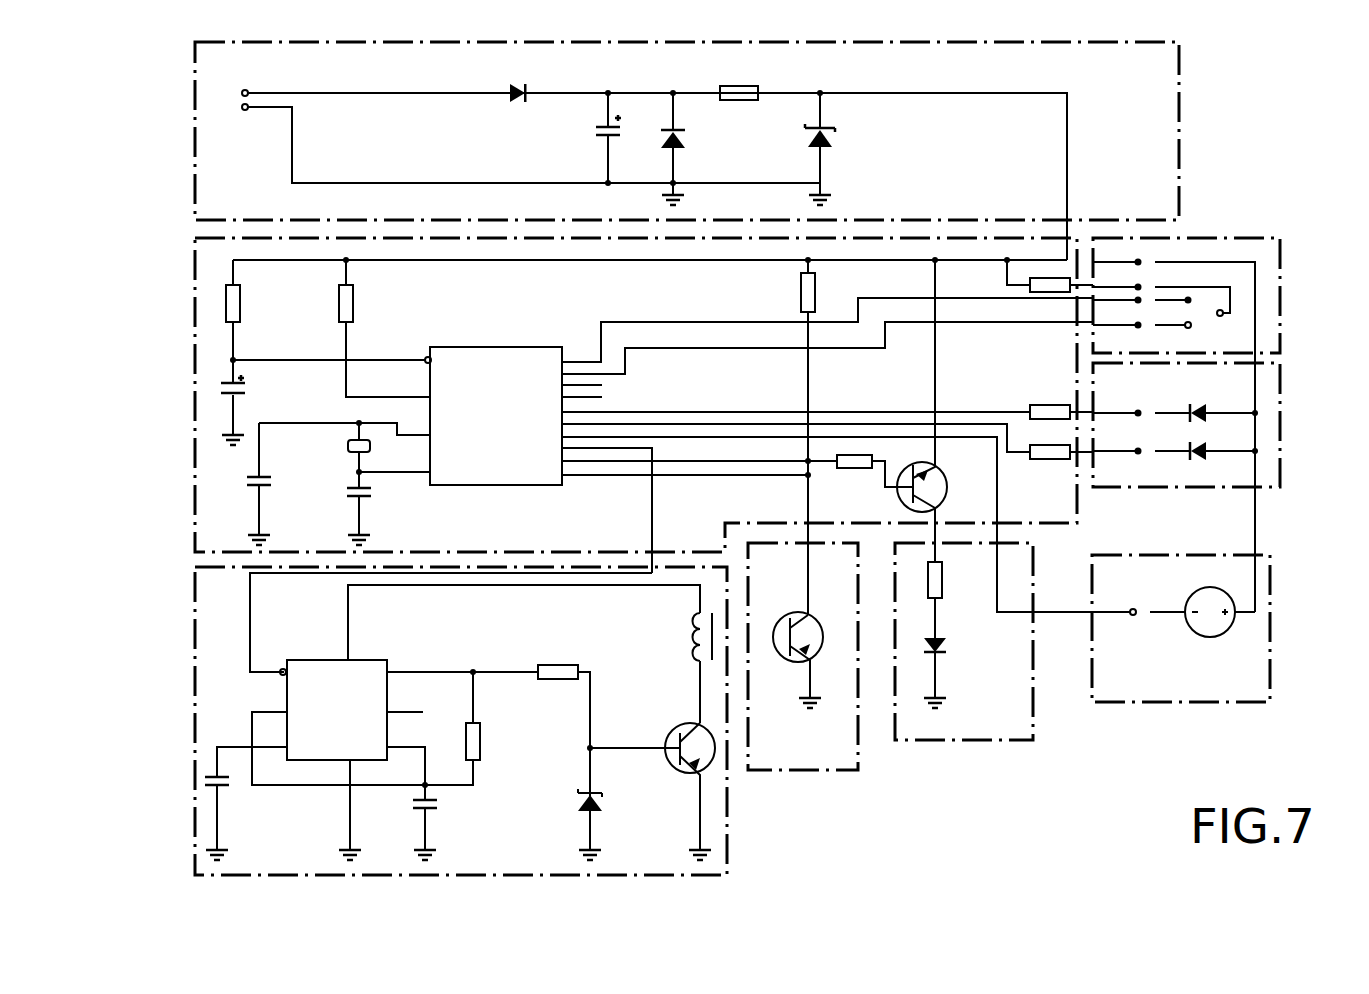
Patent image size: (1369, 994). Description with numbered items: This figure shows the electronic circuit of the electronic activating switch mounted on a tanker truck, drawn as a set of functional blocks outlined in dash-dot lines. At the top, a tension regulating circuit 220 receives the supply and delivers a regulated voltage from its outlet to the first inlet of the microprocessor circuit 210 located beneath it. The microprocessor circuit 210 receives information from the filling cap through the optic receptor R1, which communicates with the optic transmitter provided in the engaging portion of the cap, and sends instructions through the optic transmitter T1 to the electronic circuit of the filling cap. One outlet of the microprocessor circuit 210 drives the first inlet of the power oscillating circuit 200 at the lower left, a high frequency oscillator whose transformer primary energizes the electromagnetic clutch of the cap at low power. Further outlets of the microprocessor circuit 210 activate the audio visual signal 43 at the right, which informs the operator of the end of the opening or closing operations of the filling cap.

The tension regulating circuit 220 is at (1160, 131).
The microprocessor circuit 210 is at (212, 513).
The power oscillating circuit 200 is at (222, 630).
The first optic receptor R1 is at (790, 748).
The first optic transmitter T1 is at (990, 715).
The audio visual signal 43 is at (1255, 654).